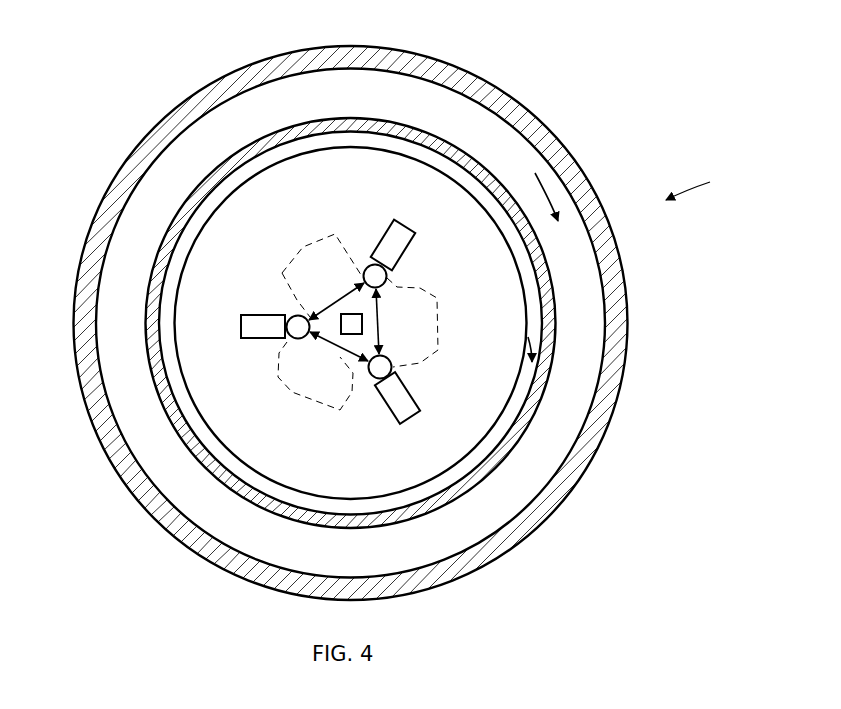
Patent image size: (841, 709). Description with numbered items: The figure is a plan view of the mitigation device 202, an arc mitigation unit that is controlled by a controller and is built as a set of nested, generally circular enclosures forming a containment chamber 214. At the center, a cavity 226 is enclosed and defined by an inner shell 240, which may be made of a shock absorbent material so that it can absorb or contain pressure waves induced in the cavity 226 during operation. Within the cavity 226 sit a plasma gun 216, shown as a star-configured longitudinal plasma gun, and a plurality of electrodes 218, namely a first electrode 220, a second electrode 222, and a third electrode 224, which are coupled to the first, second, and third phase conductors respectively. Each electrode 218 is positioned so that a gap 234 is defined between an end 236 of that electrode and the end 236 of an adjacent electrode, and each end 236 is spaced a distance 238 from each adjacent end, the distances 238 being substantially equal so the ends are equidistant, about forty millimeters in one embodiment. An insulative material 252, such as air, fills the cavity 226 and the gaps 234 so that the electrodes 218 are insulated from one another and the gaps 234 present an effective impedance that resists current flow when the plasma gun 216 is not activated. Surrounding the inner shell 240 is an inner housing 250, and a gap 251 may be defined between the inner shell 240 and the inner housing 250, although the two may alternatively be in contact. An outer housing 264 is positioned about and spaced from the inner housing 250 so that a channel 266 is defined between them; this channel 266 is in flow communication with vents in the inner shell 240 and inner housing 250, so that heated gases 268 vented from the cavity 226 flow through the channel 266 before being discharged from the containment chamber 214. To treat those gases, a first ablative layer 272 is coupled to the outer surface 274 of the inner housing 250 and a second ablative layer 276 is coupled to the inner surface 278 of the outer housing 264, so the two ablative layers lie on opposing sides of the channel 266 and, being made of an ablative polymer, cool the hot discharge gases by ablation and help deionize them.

The mitigation device 202 is at (709, 186).
The containment chamber 214 is at (557, 140).
The plasma gun 216 is at (368, 377).
The electrode 218 is at (250, 342).
The first electrode 220 is at (253, 315).
The second electrode 222 is at (375, 263).
The third electrode 224 is at (417, 397).
The cavity 226 is at (332, 202).
The gap 234 is at (335, 295).
The end 236 is at (390, 277).
The distance 238 is at (310, 255).
The inner shell 240 is at (477, 200).
The inner housing 250 is at (548, 307).
The gap 251 is at (552, 330).
The insulative material 252 is at (362, 302).
The outer housing 264 is at (502, 97).
The channel 266 is at (378, 102).
The gases 268 is at (533, 188).
The first ablative layer 272 is at (252, 138).
The outer surface 274 is at (275, 133).
The second ablative layer 276 is at (145, 170).
The inner surface 278 is at (180, 144).